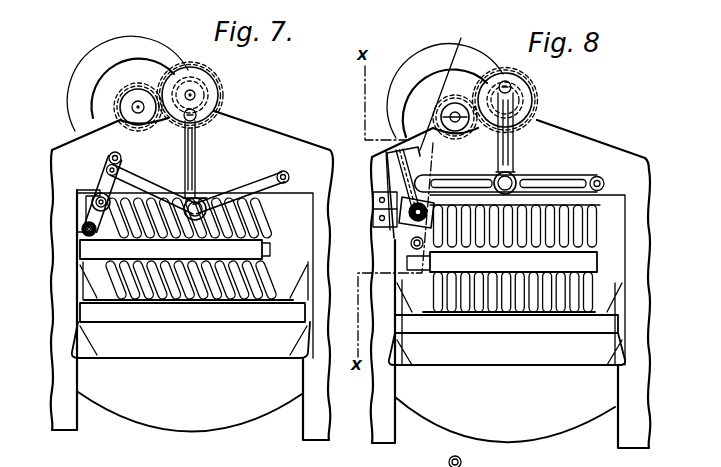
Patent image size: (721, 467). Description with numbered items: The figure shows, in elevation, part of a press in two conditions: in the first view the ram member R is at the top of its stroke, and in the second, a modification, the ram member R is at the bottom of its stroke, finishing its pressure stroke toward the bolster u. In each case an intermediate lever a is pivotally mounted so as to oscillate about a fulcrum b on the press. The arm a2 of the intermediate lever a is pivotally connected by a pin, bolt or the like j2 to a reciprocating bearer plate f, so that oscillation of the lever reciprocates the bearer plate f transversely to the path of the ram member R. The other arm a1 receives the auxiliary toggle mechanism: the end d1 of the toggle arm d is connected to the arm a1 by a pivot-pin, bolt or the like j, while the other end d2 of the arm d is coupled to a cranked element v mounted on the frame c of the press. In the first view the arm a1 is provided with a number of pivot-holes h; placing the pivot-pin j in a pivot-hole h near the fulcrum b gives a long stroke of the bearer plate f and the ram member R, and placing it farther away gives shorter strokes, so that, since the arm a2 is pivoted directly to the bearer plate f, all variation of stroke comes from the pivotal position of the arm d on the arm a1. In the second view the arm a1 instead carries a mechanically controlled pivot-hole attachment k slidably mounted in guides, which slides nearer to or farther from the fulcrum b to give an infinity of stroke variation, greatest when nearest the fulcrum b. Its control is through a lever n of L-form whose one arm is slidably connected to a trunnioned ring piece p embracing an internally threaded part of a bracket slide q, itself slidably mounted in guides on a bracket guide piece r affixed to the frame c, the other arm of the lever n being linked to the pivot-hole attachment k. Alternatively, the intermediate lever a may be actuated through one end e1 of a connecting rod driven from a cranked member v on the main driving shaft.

In FIG. 7, the frame c is at (66, 341).
In FIG. 8, the frame c is at (603, 157).
In FIG. 7, the bracket guide piece r is at (198, 101).
In FIG. 8, the bracket guide piece r is at (375, 220).
In FIG. 7, the arm of auxiliary toggle-mechanism d is at (126, 177).
In FIG. 8, the arm of auxiliary toggle-mechanism d is at (495, 163).
In FIG. 7, the end of arm d1 is at (110, 168).
In FIG. 8, the other end of arm d2 is at (468, 181).
In FIG. 7, the pivot-pin j is at (103, 180).
In FIG. 7, the pin j2 is at (84, 235).
In FIG. 8, the pin j2 is at (412, 247).
In FIG. 7, the end of connecting rod e1 is at (113, 152).
In FIG. 7, the pivot-holes h is at (110, 155).
In FIG. 8, the pivot-holes h is at (447, 462).
In FIG. 7, the arm of intermediate lever a1 is at (98, 193).
In FIG. 8, the arm of intermediate lever a1 is at (398, 178).
In FIG. 7, the intermediate lever a is at (93, 208).
In FIG. 8, the intermediate lever a is at (410, 222).
In FIG. 7, the arm of intermediate lever a2 is at (86, 232).
In FIG. 8, the arm of intermediate lever a2 is at (412, 245).
In FIG. 7, the fulcrum b is at (95, 202).
In FIG. 7, the reciprocating bearer plate f is at (262, 252).
In FIG. 8, the reciprocating bearer plate f is at (592, 265).
In FIG. 7, the ram member R is at (192, 313).
In FIG. 8, the ram member R is at (506, 324).
In FIG. 7, the bolster u is at (274, 364).
In FIG. 8, the bolster u is at (420, 365).
In FIG. 8, the pivot-hole attachment k is at (444, 84).
In FIG. 8, the lever of L-form n is at (398, 143).
In FIG. 8, the cranked element v is at (518, 89).
In FIG. 8, the bracket slide q is at (380, 199).
In FIG. 8, the trunnioned ring piece p is at (400, 226).